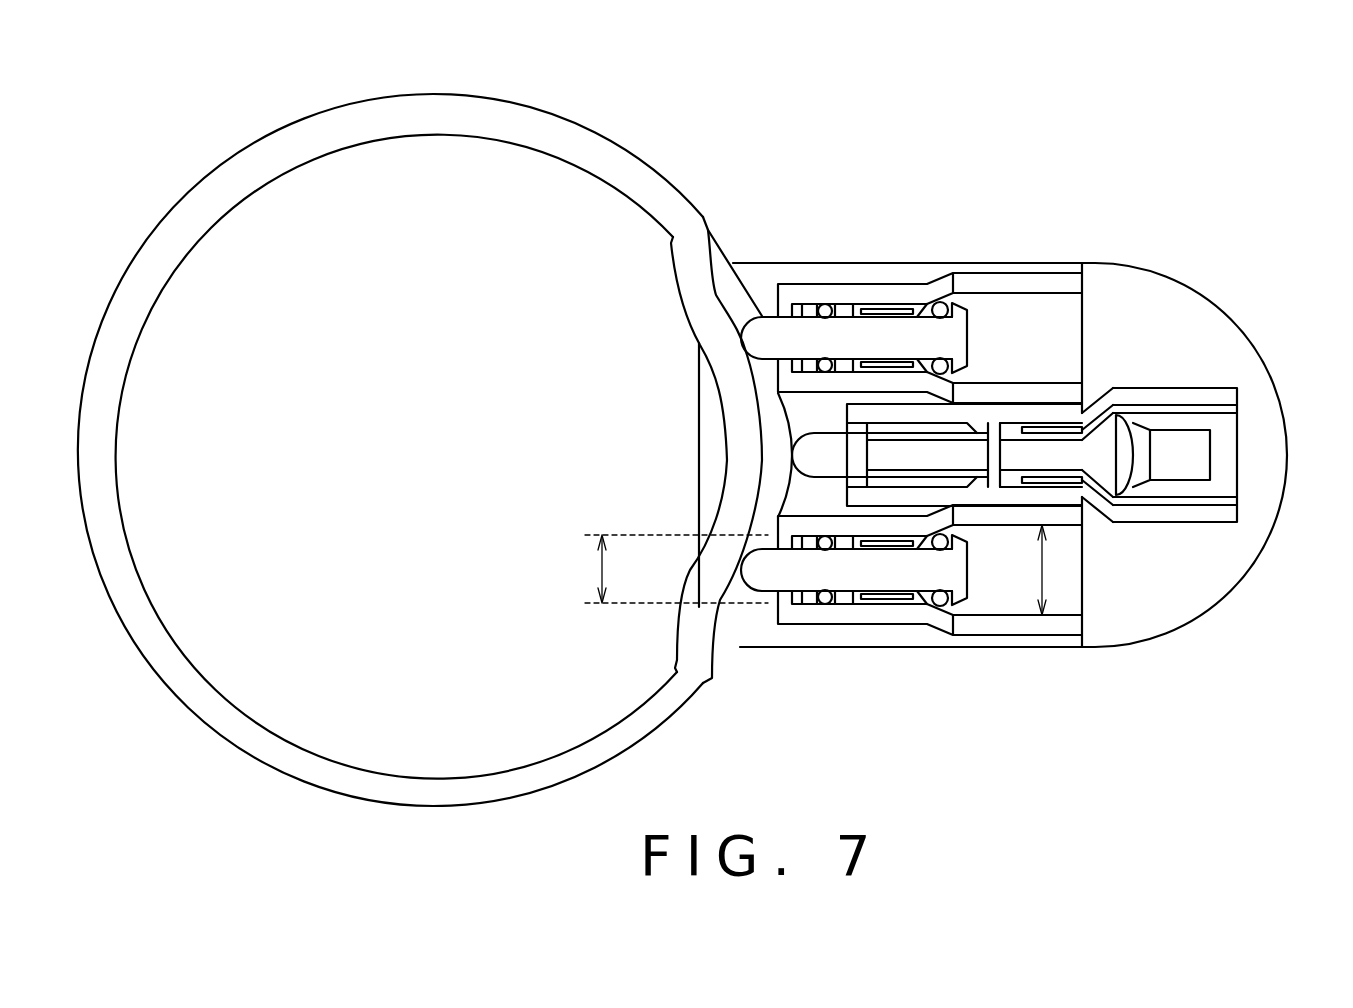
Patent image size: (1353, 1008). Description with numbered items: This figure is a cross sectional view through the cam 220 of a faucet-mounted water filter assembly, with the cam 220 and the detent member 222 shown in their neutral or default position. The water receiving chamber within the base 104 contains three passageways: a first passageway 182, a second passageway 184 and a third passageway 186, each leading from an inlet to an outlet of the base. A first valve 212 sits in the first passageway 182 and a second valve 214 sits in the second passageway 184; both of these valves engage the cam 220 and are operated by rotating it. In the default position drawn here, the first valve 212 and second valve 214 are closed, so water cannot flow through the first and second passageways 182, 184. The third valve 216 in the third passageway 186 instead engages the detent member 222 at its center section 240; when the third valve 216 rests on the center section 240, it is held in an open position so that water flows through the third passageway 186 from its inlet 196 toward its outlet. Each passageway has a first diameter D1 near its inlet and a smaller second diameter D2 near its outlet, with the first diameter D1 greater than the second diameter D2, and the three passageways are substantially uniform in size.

The base 104 is at (1104, 266).
The first passageway 182 is at (883, 598).
The second passageway 184 is at (867, 303).
The third passageway 186 is at (1063, 488).
The inlet 196 is at (1190, 457).
The first valve 212 is at (905, 572).
The second valve 214 is at (933, 337).
The third valve 216 is at (1105, 432).
The cam 220 is at (673, 266).
The detent member 222 is at (723, 243).
The center section 240 is at (775, 443).
The first diameter D1 is at (1044, 571).
The second diameter D2 is at (602, 568).